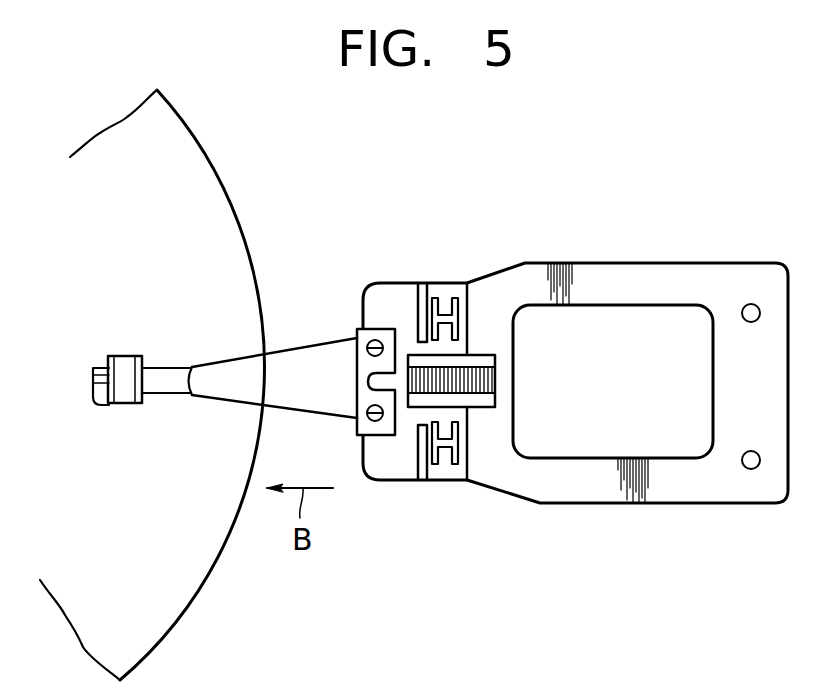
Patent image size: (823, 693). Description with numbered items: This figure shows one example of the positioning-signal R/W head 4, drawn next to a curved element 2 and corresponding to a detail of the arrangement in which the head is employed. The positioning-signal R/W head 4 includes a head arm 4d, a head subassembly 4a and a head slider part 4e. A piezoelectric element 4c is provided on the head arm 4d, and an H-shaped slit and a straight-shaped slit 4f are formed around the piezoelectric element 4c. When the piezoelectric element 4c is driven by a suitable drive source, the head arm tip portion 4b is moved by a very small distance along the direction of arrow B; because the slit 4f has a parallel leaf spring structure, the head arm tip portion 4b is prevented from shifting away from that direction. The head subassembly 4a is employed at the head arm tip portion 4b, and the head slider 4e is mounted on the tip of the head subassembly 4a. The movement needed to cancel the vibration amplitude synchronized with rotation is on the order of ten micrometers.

The photosensitive drum 2 is at (205, 183).
The positioning-signal R/W head 4 is at (578, 155).
The head subassembly 4a is at (292, 362).
The head arm tip portion 4b is at (386, 466).
The piezoelectric element 4c is at (487, 400).
The head arm 4d is at (655, 262).
The head slider 4e is at (122, 362).
The slit 4f is at (448, 300).